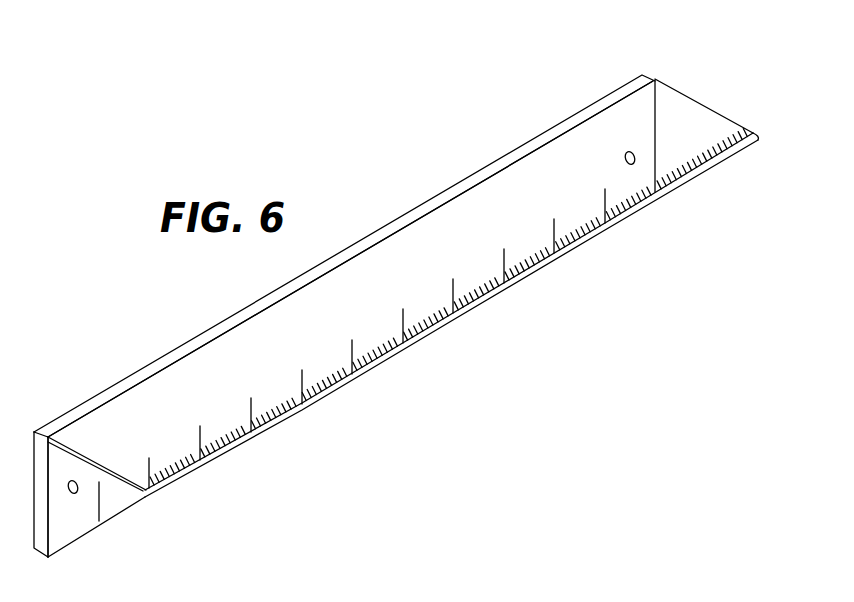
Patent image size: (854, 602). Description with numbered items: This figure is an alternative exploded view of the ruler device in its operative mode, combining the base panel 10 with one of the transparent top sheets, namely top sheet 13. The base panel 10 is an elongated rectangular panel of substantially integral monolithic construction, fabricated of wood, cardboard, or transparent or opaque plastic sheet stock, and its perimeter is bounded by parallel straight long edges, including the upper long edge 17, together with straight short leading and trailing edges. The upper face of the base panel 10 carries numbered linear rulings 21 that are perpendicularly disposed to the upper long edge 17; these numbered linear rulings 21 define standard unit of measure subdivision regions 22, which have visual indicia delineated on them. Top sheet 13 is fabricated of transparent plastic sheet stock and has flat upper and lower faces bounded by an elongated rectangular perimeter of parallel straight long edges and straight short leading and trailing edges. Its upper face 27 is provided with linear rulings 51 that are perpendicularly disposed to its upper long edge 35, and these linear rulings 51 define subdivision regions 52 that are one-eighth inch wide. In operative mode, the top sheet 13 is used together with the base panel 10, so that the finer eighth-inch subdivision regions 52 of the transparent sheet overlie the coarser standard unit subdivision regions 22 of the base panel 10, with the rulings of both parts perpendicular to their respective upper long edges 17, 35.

The base panel 10 is at (557, 131).
The top sheet 13 is at (660, 79).
The upper face 27 is at (698, 117).
The linear rulings 51 is at (751, 134).
The upper long edge 35 is at (713, 166).
The subdivision regions 52 is at (679, 183).
The upper long edge 17 is at (122, 505).
The subdivision regions 22 is at (57, 531).
The numbered linear rulings 21 is at (99, 521).